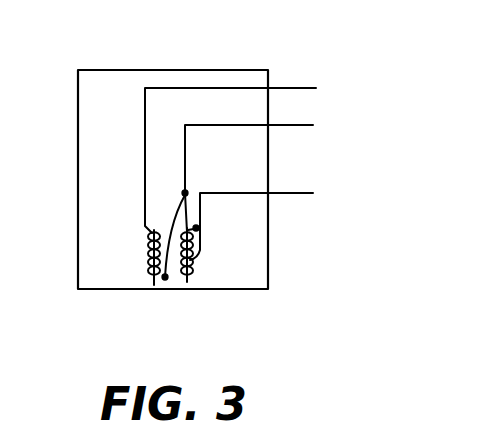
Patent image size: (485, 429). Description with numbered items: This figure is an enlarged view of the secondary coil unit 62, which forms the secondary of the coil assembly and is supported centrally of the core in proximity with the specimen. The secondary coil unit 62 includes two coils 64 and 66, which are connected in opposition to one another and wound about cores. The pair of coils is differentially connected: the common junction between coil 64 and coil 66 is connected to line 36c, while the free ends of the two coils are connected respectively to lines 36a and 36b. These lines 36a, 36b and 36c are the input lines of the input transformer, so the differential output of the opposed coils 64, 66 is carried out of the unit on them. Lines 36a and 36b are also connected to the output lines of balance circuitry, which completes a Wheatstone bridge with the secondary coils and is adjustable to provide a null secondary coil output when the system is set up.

The secondary coil unit 62 is at (117, 88).
The input line 36a is at (292, 88).
The input line 36b is at (285, 196).
The input line 36c is at (285, 128).
The coil 64 is at (148, 262).
The coil 66 is at (192, 262).